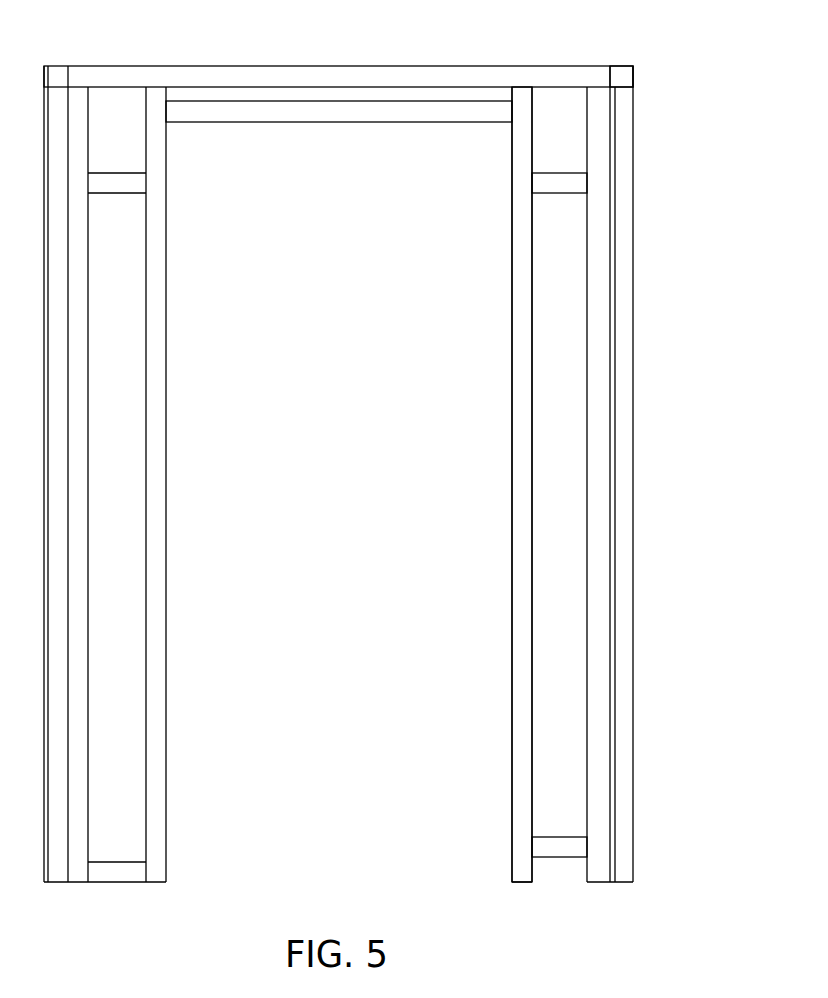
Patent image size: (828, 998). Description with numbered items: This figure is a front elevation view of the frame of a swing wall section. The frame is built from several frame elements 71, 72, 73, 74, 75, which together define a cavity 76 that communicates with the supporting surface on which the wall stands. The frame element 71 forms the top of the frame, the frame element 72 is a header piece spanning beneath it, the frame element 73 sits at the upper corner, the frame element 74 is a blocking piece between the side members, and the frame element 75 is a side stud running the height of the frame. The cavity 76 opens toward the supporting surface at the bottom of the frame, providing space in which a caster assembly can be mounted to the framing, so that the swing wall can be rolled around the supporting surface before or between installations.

The frame element 71 is at (205, 77).
The frame element 72 is at (322, 112).
The frame element 73 is at (624, 75).
The frame element 74 is at (555, 183).
The frame element 75 is at (521, 412).
The cavity 76 is at (560, 865).